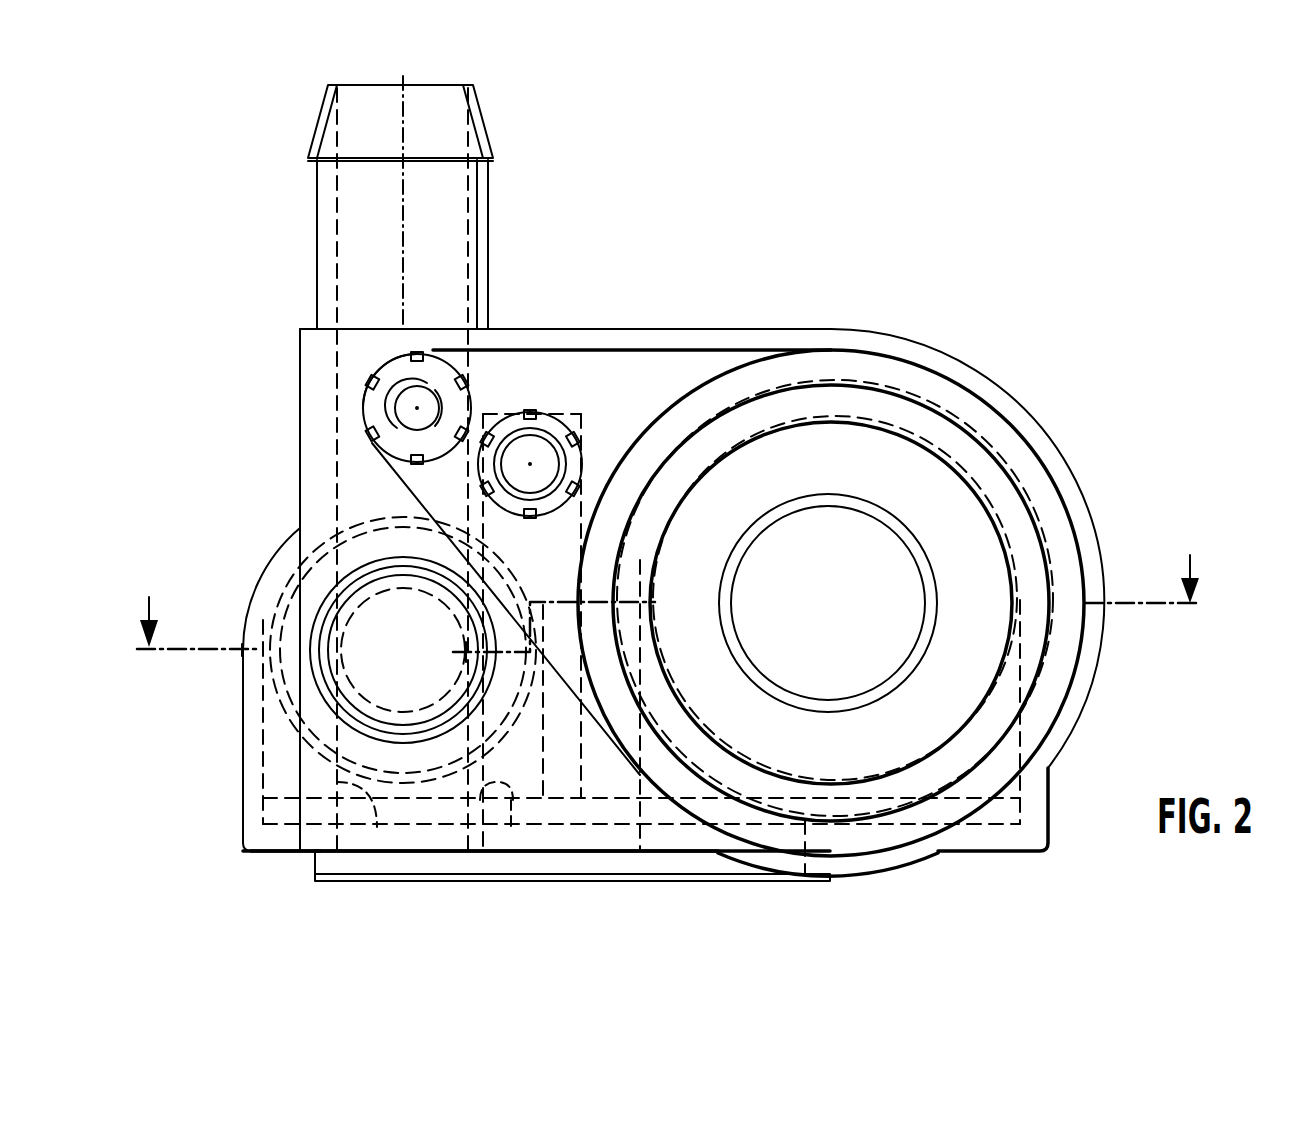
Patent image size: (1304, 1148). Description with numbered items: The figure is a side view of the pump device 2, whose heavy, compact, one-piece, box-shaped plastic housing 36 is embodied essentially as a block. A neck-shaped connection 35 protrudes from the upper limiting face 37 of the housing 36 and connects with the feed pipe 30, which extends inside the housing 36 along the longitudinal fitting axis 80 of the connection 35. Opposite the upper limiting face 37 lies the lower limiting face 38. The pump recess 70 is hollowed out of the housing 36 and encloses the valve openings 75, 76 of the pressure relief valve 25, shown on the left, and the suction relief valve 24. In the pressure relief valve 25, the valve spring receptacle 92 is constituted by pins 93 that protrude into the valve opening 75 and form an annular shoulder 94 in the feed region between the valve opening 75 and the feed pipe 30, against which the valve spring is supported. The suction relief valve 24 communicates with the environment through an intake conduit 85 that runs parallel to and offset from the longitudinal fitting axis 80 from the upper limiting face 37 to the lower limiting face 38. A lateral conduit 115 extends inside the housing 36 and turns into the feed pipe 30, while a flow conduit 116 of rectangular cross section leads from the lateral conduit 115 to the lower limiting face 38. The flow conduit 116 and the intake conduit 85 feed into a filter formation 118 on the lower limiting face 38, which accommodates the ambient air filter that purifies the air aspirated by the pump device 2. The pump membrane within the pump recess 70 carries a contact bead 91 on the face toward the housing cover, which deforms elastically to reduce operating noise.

The pump device 2 is at (1188, 244).
The suction relief valve 24 is at (548, 462).
The pressure relief valve 25 is at (410, 409).
The feed pipe 30 is at (464, 280).
The neck-shaped connection 35 is at (447, 129).
The housing 36 is at (315, 370).
The upper limiting face 37 is at (651, 330).
The lower limiting face 38 is at (344, 849).
The pump recess 70 is at (588, 392).
The valve opening 75 is at (363, 407).
The valve opening 76 is at (553, 415).
The longitudinal fitting axis 80 is at (402, 96).
The intake conduit 85 is at (512, 832).
The contact bead 91 is at (905, 675).
The valve spring receptacle 92 is at (390, 378).
The pins 93 is at (390, 378).
The annular shoulder 94 is at (443, 370).
The lateral conduit 115 is at (370, 672).
The flow conduit 116 is at (380, 832).
The filter formation 118 is at (688, 866).